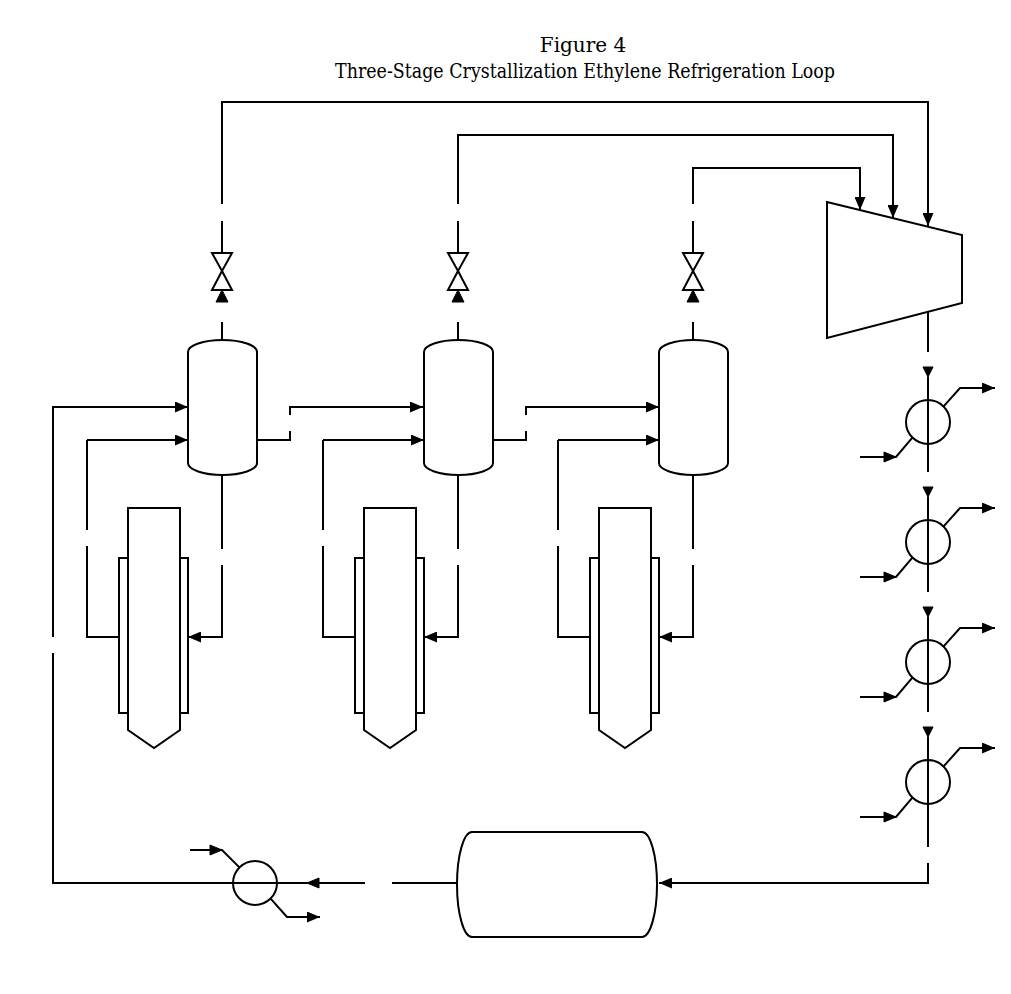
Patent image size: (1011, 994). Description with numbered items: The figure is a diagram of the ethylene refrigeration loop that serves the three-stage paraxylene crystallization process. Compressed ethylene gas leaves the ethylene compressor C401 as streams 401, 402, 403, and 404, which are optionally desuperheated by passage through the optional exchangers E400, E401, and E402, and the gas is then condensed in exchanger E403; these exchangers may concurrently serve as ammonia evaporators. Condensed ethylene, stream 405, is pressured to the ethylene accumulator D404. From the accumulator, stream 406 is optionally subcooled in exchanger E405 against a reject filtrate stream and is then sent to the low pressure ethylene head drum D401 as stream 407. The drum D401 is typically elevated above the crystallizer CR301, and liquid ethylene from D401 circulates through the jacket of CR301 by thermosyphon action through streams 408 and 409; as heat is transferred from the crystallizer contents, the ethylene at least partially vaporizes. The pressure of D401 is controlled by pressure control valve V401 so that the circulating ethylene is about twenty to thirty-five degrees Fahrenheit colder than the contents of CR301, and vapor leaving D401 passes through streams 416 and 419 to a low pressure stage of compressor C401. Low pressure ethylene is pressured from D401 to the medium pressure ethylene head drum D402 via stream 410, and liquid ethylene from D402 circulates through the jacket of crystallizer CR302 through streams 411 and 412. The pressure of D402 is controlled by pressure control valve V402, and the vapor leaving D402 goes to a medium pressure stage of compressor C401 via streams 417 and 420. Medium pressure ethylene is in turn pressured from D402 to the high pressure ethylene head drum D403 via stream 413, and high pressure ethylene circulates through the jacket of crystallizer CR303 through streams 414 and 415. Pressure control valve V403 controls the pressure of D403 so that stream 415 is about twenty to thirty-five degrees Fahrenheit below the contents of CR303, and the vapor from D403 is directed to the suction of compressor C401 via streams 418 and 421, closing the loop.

The compressed ethylene gas stream 401 is at (928, 367).
The compressed ethylene gas stream 402 is at (928, 482).
The compressed ethylene gas stream 403 is at (928, 602).
The compressed ethylene gas stream 404 is at (928, 722).
The condensed ethylene stream 405 is at (800, 832).
The ethylene stream from accumulator 406 is at (367, 883).
The subcooled ethylene stream 407 is at (158, 645).
The thermosyphon circulation stream 408 is at (211, 556).
The thermosyphon circulation stream 409 is at (131, 538).
The low pressure ethylene stream 410 is at (340, 423).
The thermosyphon circulation stream 411 is at (447, 556).
The thermosyphon circulation stream 412 is at (367, 538).
The medium pressure ethylene stream 413 is at (576, 423).
The thermosyphon circulation stream 414 is at (682, 556).
The thermosyphon circulation stream 415 is at (602, 538).
The low pressure ethylene vapor stream 416 is at (222, 315).
The medium pressure ethylene vapor stream 417 is at (458, 315).
The high pressure ethylene vapor stream 418 is at (693, 315).
The low pressure compressor feed stream 419 is at (568, 177).
The medium pressure compressor feed stream 420 is at (669, 194).
The high pressure compressor feed stream 421 is at (770, 210).
The low pressure ethylene head drum D401 is at (222, 407).
The medium pressure ethylene head drum D402 is at (458, 407).
The high pressure ethylene head drum D403 is at (693, 407).
The ethylene accumulator D404 is at (557, 884).
The pressure control valve V401 is at (195, 271).
The pressure control valve V402 is at (431, 271).
The pressure control valve V403 is at (666, 271).
The ethylene compressor C401 is at (894, 270).
The ethylene desuperheater exchanger E400 is at (925, 425).
The ethylene desuperheater exchanger E401 is at (925, 545).
The ethylene desuperheater exchanger E402 is at (925, 665).
The ethylene condenser exchanger E403 is at (925, 785).
The ethylene subcooler exchanger E405 is at (221, 870).
The first-stage crystallizer CR301 is at (153, 628).
The second-stage crystallizer CR302 is at (389, 628).
The third-stage crystallizer CR303 is at (624, 628).